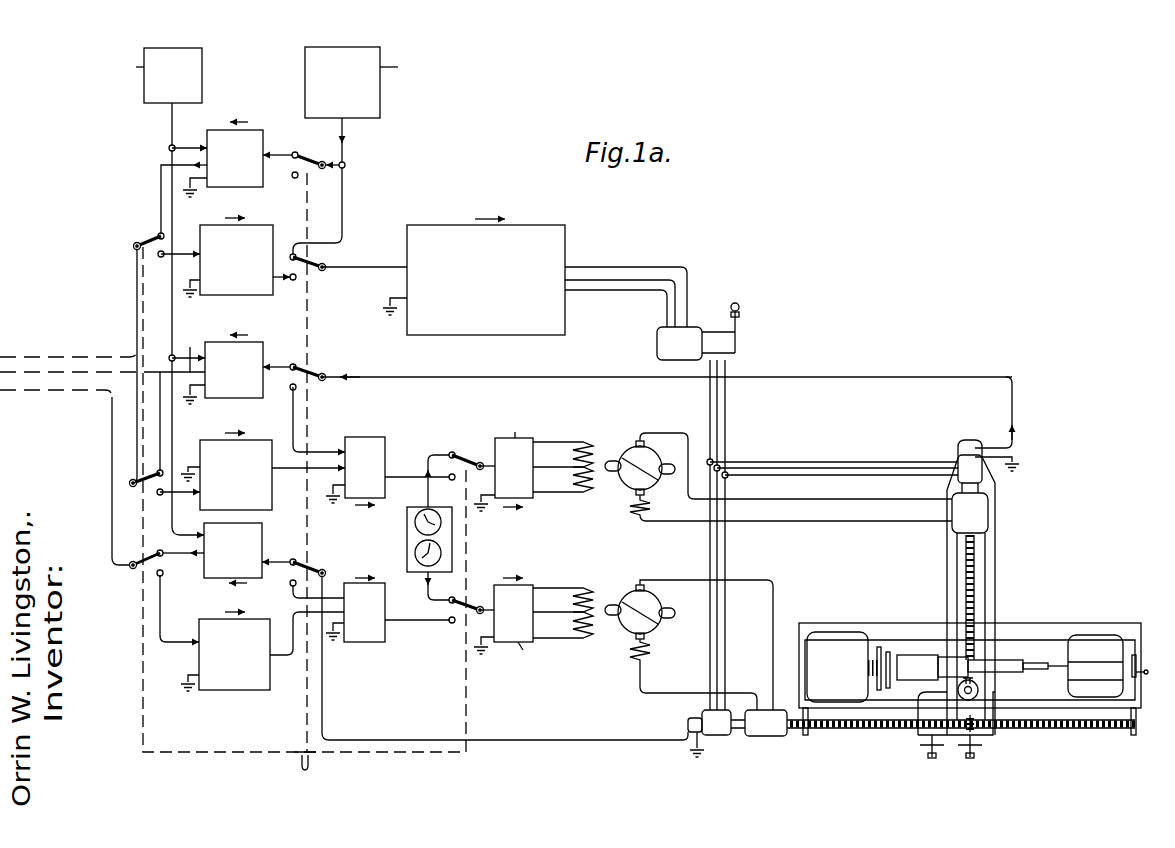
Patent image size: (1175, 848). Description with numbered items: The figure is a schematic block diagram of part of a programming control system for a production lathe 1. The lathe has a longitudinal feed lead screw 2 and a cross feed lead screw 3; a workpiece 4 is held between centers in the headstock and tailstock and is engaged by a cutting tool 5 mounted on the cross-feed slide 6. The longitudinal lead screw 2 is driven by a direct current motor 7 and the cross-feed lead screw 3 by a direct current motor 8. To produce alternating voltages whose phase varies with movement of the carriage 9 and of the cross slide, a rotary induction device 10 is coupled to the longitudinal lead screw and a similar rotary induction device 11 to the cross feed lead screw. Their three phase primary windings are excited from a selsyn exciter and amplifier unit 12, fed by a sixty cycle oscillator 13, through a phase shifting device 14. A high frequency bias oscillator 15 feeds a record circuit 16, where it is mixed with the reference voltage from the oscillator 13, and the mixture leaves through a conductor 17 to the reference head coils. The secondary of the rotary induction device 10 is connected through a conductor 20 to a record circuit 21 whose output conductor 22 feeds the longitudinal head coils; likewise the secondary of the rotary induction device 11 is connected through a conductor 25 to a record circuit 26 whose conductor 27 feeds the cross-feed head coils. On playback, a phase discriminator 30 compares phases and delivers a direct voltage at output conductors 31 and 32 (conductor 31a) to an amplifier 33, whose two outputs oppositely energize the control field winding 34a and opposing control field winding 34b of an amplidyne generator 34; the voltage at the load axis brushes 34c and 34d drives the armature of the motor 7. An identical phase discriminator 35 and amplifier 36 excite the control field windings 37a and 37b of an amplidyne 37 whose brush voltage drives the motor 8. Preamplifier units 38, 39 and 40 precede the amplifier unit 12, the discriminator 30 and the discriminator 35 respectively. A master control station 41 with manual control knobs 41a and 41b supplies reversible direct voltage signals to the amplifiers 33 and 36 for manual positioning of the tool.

The production lathe 1 is at (912, 626).
The longitudinal feed lead screw 2 is at (845, 729).
The cross feed lead screw 3 is at (978, 575).
The workpiece 4 is at (1013, 664).
The cutting tool 5 is at (975, 686).
The cross-feed slide 6 is at (955, 694).
The direct current motor 7 is at (776, 736).
The direct current motor 8 is at (983, 508).
The carriage 9 is at (988, 737).
The rotary induction device 10 is at (722, 731).
The rotary induction device 11 is at (960, 462).
The selsyn exciter and amplifier unit 12 is at (565, 236).
The oscillator 13 is at (342, 52).
The phase shifting device 14 is at (657, 344).
The oscillator 15 is at (173, 49).
The record circuit 16 is at (263, 137).
The conductor 17 is at (160, 196).
The conductor 20 is at (545, 742).
The record circuit 21 is at (262, 547).
The output conductor 22 is at (170, 558).
The conductor 25 is at (1015, 393).
The record circuit 26 is at (264, 345).
The conductor 27 is at (191, 352).
The phase discriminator 30 is at (389, 635).
The output conductor 31 is at (400, 625).
The conductor 31a is at (487, 605).
The output conductor 32 is at (335, 608).
The amplifier 33 is at (535, 635).
The amplidyne generator 34 is at (689, 632).
The control field winding 34a is at (590, 590).
The opposing control field winding 34b is at (590, 636).
The load axis brush 34c is at (648, 590).
The load axis brush 34d is at (646, 640).
The phase discriminator 35 is at (372, 446).
The amplifier 36 is at (520, 451).
The amplidyne 37 is at (632, 444).
The control field winding 37a is at (590, 446).
The control field winding 37b is at (588, 495).
The preamplifier unit 38 is at (268, 233).
The preamplifier unit 39 is at (262, 446).
The preamplifier unit 40 is at (263, 626).
The master control station 41 is at (420, 528).
The manual control knob 41a is at (430, 523).
The manual control knob 41b is at (420, 562).